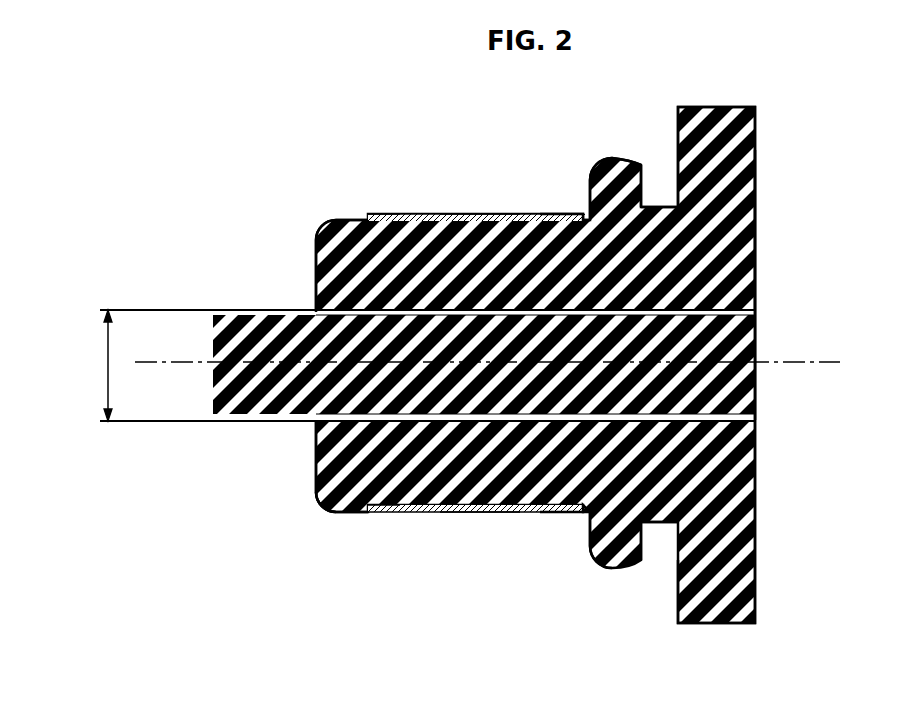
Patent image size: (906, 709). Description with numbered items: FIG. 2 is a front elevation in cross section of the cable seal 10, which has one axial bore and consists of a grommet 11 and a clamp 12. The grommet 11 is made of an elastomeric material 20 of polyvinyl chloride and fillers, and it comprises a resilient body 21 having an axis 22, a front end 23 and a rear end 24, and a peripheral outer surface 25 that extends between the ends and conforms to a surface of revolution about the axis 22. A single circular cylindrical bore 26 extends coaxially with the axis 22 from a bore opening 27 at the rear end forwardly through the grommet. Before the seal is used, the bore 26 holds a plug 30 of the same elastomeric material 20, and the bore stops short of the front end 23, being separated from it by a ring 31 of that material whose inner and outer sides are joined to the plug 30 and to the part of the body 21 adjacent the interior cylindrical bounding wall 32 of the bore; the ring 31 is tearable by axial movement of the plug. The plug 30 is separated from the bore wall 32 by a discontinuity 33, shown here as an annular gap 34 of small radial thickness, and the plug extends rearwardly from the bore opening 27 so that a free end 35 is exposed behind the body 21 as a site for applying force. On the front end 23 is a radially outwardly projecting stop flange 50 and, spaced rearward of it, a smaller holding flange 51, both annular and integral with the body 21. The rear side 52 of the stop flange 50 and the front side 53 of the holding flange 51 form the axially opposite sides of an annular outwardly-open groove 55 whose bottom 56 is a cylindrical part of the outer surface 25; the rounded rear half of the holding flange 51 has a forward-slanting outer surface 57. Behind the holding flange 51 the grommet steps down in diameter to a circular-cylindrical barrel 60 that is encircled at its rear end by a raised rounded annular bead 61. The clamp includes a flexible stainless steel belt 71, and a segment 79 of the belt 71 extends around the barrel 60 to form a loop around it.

The cable seal 10 is at (228, 286).
The grommet 11 is at (316, 237).
The clamp 12 is at (440, 214).
The elastomeric material 20 is at (752, 257).
The resilient body 21 is at (430, 512).
The axis 22 is at (768, 363).
The front end 23 is at (757, 223).
The rear end 24 is at (316, 482).
The peripheral outer surface 25 is at (366, 513).
The circular cylindrical bore 26 is at (107, 363).
The bore opening 27 is at (310, 422).
The plug 30 is at (333, 505).
The ring 31 is at (757, 312).
The bounding wall 32 is at (548, 217).
The discontinuity 33 is at (382, 233).
The annular gap 34 is at (522, 512).
The free end 35 is at (222, 338).
The stop flange 50 is at (757, 152).
The holding flange 51 is at (598, 184).
The rear side 52 is at (672, 112).
The front side 53 is at (637, 163).
The groove 55 is at (665, 192).
The bottom 56 is at (647, 185).
The outer surface 57 is at (605, 165).
The barrel 60 is at (477, 214).
The bead 61 is at (334, 218).
The belt 71 is at (392, 513).
The segment 79 is at (416, 214).